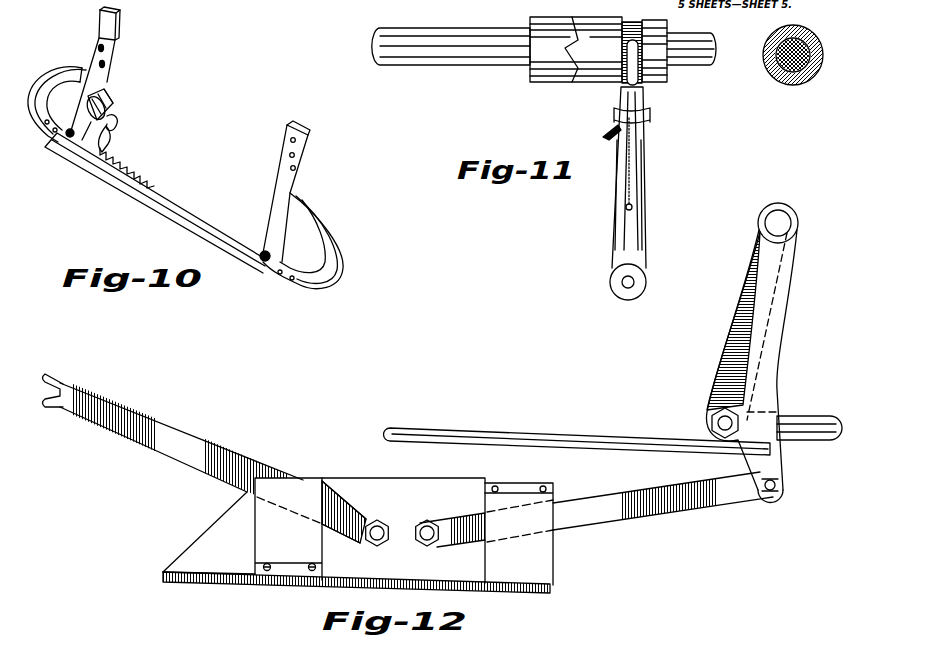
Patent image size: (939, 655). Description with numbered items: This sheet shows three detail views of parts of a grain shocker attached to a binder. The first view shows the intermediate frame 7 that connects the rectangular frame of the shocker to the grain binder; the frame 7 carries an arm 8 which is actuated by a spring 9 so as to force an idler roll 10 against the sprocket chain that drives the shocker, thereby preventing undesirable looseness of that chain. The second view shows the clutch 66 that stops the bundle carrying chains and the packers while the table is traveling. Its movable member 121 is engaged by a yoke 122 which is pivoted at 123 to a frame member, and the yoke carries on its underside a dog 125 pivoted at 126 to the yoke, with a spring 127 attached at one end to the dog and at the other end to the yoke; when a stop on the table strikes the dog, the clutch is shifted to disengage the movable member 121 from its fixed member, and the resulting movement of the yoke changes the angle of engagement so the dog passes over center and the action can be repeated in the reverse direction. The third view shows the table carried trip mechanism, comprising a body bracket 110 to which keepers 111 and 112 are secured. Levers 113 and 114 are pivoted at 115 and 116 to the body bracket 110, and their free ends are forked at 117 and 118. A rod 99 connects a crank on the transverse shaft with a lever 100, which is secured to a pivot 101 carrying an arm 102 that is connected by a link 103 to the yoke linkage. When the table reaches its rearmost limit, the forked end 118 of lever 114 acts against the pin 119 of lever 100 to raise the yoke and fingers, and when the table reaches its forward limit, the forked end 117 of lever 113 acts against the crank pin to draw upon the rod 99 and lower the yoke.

In FIG. 10, the intermediate frame 7 is at (190, 218).
In FIG. 10, the arm 8 is at (119, 123).
In FIG. 10, the spring 9 is at (128, 173).
In FIG. 10, the idler roll 10 is at (108, 100).
In FIG. 11, the clutch 66 is at (544, 64).
In FIG. 12, the rod 99 is at (613, 430).
In FIG. 12, the lever 100 is at (770, 380).
In FIG. 12, the pivot 101 is at (788, 224).
In FIG. 12, the arm 102 is at (733, 318).
In FIG. 12, the link 103 is at (818, 446).
In FIG. 12, the body bracket 110 is at (403, 530).
In FIG. 12, the keeper 111 is at (288, 529).
In FIG. 12, the keeper 112 is at (519, 534).
In FIG. 12, the lever 113 is at (356, 503).
In FIG. 12, the lever 114 is at (596, 509).
In FIG. 12, the pivot 115 is at (386, 526).
In FIG. 12, the pivot 116 is at (440, 533).
In FIG. 12, the forked end 117 is at (67, 385).
In FIG. 12, the forked end 118 is at (778, 482).
In FIG. 12, the pin 119 is at (776, 493).
In FIG. 11, the movable clutch member 121 is at (576, 49).
In FIG. 11, the yoke 122 is at (645, 94).
In FIG. 11, the pivot 123 is at (646, 282).
In FIG. 11, the dog 125 is at (606, 127).
In FIG. 11, the pivot 126 is at (646, 124).
In FIG. 11, the spring 127 is at (636, 176).